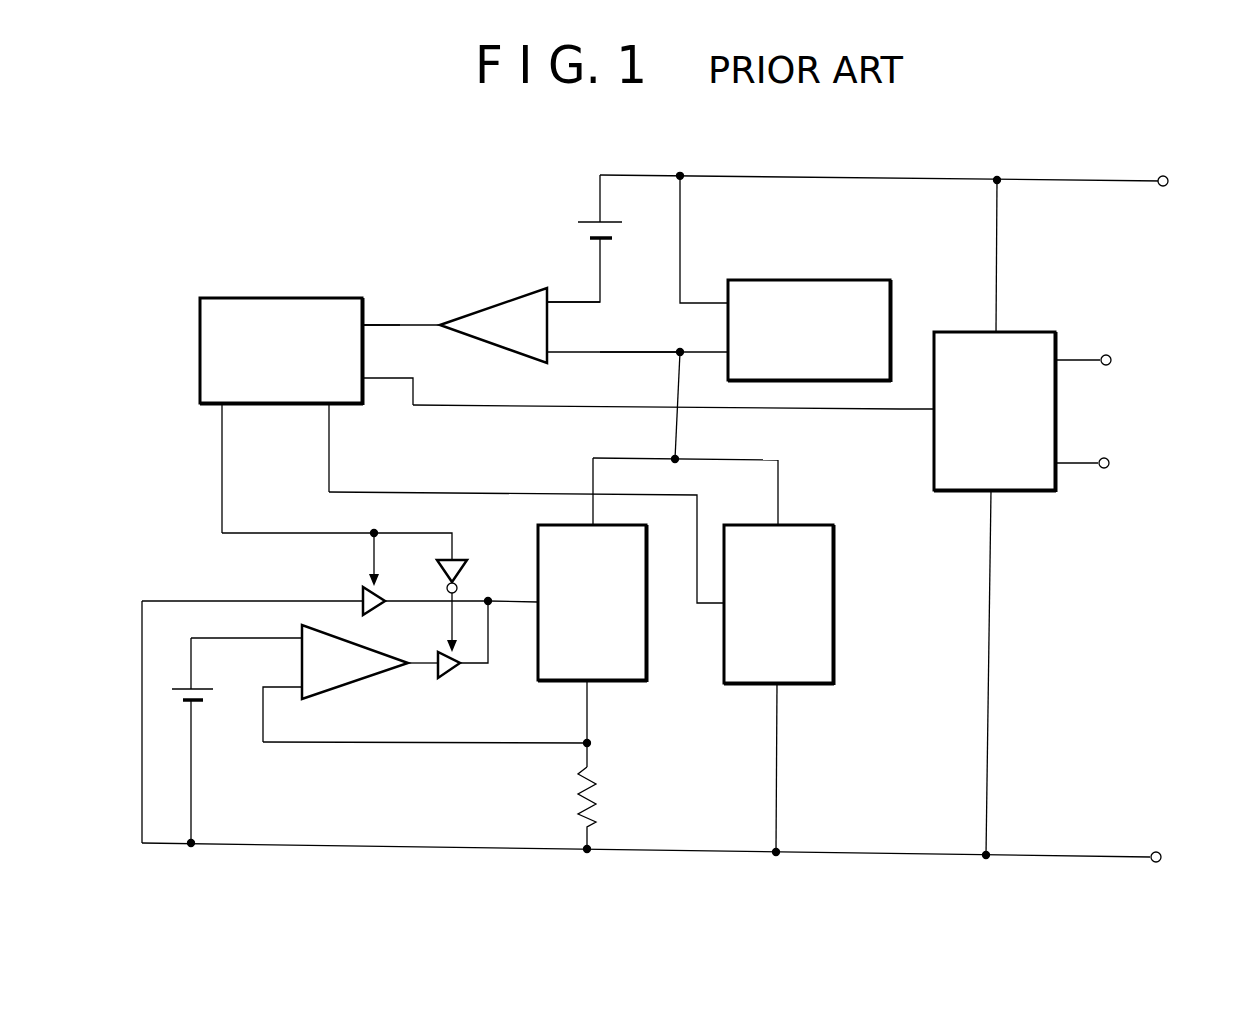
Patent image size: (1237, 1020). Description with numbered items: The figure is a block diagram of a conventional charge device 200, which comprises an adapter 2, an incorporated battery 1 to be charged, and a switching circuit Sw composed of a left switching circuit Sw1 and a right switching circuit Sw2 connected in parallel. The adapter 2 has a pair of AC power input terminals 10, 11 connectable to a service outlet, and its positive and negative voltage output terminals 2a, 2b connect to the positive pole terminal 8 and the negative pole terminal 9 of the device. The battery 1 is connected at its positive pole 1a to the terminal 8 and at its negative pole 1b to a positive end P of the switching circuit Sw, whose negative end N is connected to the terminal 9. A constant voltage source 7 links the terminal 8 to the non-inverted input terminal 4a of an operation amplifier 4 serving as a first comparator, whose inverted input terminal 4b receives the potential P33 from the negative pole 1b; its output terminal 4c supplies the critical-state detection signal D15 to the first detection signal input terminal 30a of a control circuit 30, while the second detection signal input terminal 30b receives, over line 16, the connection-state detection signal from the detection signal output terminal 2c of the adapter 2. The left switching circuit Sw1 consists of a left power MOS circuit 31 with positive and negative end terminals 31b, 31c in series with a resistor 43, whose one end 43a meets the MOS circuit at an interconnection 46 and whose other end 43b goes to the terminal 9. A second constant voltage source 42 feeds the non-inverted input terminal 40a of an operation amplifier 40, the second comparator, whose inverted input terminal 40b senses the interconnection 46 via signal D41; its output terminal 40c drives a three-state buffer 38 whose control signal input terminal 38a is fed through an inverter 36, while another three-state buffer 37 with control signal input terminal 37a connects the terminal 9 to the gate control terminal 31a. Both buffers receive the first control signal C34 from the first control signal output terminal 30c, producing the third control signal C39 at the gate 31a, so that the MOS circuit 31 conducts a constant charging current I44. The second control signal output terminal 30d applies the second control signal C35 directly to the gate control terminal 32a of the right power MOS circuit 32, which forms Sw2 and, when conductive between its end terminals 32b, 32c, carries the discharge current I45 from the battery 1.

The charge device 200 is at (1085, 176).
The battery 1 is at (784, 291).
The positive pole 1a is at (728, 302).
The negative pole 1b is at (728, 355).
The adapter 2 is at (1026, 516).
The positive voltage output terminal 2a is at (999, 330).
The negative voltage output terminal 2b is at (990, 494).
The connection-state detection signal output terminal 2c is at (931, 408).
The operation amplifier 4 is at (521, 320).
The non-inverted input terminal 4a is at (552, 300).
The inverted input terminal 4b is at (555, 350).
The output terminal 4c is at (444, 330).
The constant voltage source 7 is at (578, 226).
The positive pole terminal 8 is at (1163, 187).
The negative pole terminal 9 is at (1154, 851).
The AC power input terminal 10 is at (1107, 352).
The AC power input terminal 11 is at (1102, 456).
The control line 16 is at (910, 411).
The control circuit 30 is at (283, 385).
The first detection signal input terminal 30a is at (366, 330).
The second detection signal input terminal 30b is at (366, 384).
The first control signal output terminal 30c is at (181, 468).
The second control signal output terminal 30d is at (280, 447).
The left power MOS circuit 31 is at (585, 627).
The gate control terminal 31a is at (505, 620).
The positive end terminal 31b is at (598, 524).
The negative end terminal 31c is at (585, 694).
The right power MOS circuit 32 is at (614, 667).
The gate control terminal 32a is at (720, 606).
The positive end terminal 32b is at (780, 522).
The negative end terminal 32c is at (770, 768).
The inverter 36 is at (466, 566).
The three-state buffer 37 is at (315, 574).
The control signal input terminal 37a is at (378, 591).
The three-state buffer 38 is at (481, 645).
The control signal input terminal 38a is at (478, 650).
The operation amplifier 40 is at (314, 673).
The non-inverted input terminal 40a is at (301, 637).
The inverted input terminal 40b is at (300, 687).
The output terminal 40c is at (410, 662).
The constant voltage source 42 is at (200, 702).
The resistor 43 is at (585, 797).
The one end 43a is at (596, 770).
The another end 43b is at (583, 824).
The interconnection 46 is at (585, 746).
The first control signal C34 is at (220, 456).
The second control signal C35 is at (326, 452).
The third control signal C39 is at (524, 606).
The critical-state detection signal D15 is at (404, 322).
The detection signal D41 is at (416, 746).
The constant current I44 is at (592, 727).
The discharge current I45 is at (779, 790).
The positive end P is at (681, 458).
The increased potential P33 is at (630, 356).
The switching circuit Sw is at (681, 438).
The left switching circuit Sw1 is at (592, 468).
The right switching circuit Sw2 is at (780, 480).
The negative end N is at (590, 855).